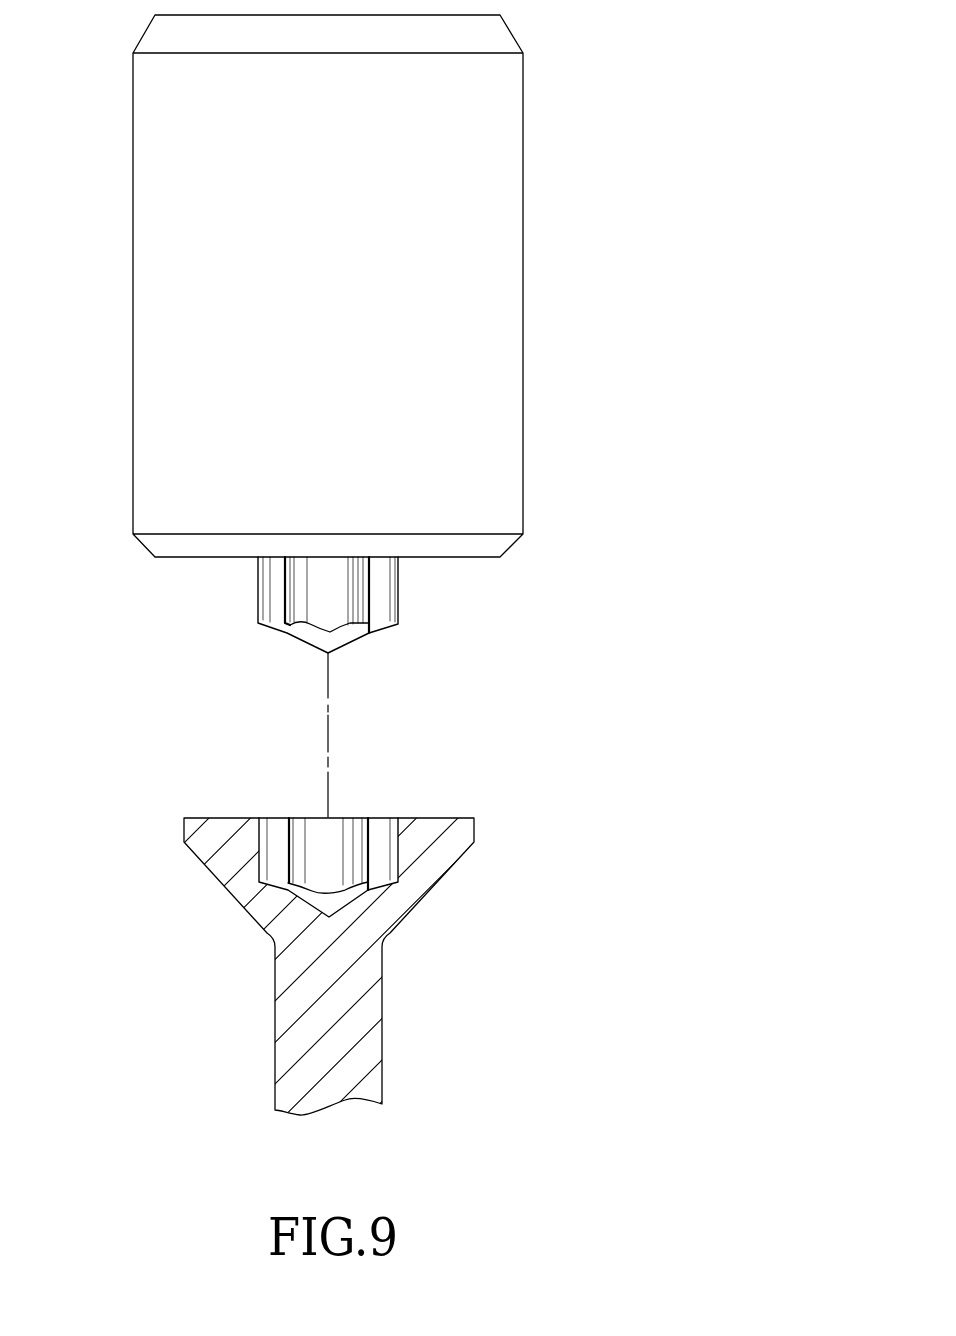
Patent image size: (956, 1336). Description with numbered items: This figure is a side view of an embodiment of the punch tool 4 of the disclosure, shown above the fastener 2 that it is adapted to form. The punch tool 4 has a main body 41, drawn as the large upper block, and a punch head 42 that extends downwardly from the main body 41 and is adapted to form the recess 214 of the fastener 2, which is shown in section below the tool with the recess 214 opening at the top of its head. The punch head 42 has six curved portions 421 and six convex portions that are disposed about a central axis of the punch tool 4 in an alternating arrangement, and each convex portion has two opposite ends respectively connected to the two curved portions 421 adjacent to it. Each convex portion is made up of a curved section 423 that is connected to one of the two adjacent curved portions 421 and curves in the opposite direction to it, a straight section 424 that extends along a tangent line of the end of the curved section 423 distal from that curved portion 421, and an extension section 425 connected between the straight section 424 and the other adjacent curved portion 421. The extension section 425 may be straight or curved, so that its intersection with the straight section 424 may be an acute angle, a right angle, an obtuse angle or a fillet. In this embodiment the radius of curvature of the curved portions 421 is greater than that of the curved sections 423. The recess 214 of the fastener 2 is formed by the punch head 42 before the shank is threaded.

The fastener 2 is at (292, 930).
The recess 214 is at (338, 850).
The punch tool 4 is at (396, 374).
The main body 41 is at (512, 292).
The punch head 42 is at (349, 606).
The curved portion 421 is at (280, 627).
The curved section 423 is at (370, 612).
The straight section 424 is at (358, 612).
The extension section 425 is at (350, 570).